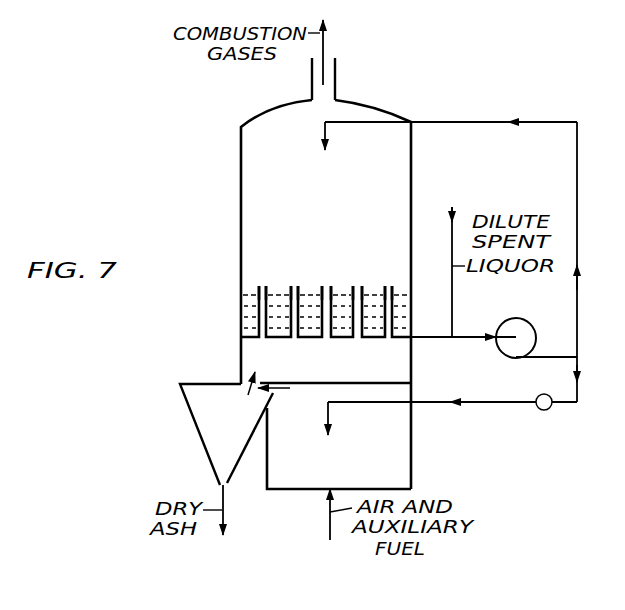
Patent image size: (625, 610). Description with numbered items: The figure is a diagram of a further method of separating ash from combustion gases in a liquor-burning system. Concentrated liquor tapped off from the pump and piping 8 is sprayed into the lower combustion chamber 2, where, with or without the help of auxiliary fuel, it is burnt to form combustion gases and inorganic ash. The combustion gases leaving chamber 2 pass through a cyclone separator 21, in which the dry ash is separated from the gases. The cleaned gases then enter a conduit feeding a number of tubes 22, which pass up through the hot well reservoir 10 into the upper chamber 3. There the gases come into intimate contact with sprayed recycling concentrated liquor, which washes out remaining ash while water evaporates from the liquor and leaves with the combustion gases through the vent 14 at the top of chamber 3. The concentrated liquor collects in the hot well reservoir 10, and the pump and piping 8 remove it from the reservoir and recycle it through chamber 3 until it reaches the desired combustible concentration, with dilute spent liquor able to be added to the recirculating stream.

The vent 14 is at (336, 78).
The upper chamber 3 is at (280, 207).
The tubes 22 is at (385, 286).
The hot well reservoir 10 is at (255, 323).
The pump and piping 8 is at (577, 302).
The cyclone separator 21 is at (193, 426).
The combustion chamber 2 is at (374, 453).